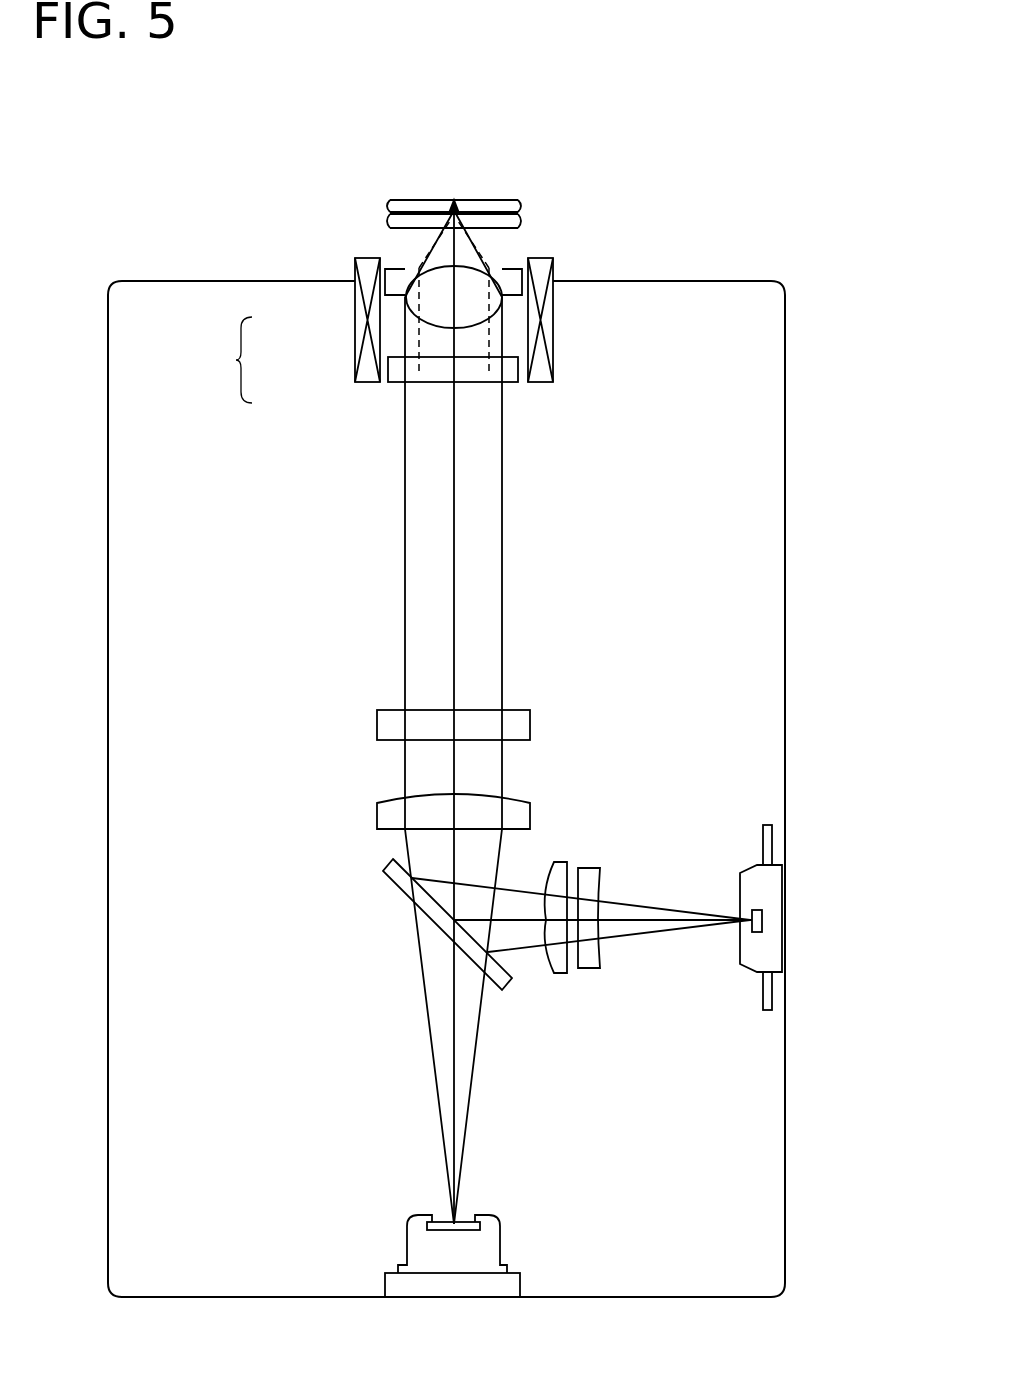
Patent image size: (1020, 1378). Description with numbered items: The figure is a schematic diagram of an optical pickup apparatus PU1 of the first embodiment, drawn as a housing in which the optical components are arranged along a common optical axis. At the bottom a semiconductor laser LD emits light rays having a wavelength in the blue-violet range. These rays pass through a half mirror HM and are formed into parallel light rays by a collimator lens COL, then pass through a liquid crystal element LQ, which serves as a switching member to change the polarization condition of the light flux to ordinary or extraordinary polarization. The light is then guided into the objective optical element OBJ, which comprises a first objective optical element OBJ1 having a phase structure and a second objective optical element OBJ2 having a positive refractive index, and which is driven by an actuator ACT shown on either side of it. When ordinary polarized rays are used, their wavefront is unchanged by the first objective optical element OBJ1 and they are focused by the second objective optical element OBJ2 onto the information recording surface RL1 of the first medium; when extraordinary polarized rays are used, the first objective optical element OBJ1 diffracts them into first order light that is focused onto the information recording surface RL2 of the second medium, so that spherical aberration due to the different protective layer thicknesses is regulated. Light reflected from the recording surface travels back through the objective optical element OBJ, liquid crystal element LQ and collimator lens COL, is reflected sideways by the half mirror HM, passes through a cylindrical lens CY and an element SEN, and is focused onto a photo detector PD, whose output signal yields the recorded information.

The optical pickup apparatus PU1 is at (785, 373).
The information recording surface RL2 is at (402, 200).
The information recording surface RL1 is at (503, 214).
The actuator ACT is at (354, 267).
The objective optical element OBJ is at (213, 360).
The second objective optical element OBJ2 is at (427, 297).
The first objective optical element OBJ1 is at (385, 370).
The liquid crystal element LQ is at (384, 723).
The collimator lens COL is at (384, 817).
The half mirror HM is at (433, 923).
The cylindrical lens CY is at (563, 973).
The sensor lens SEN is at (592, 970).
The photo detector PD is at (748, 972).
The semiconductor laser LD is at (463, 1287).